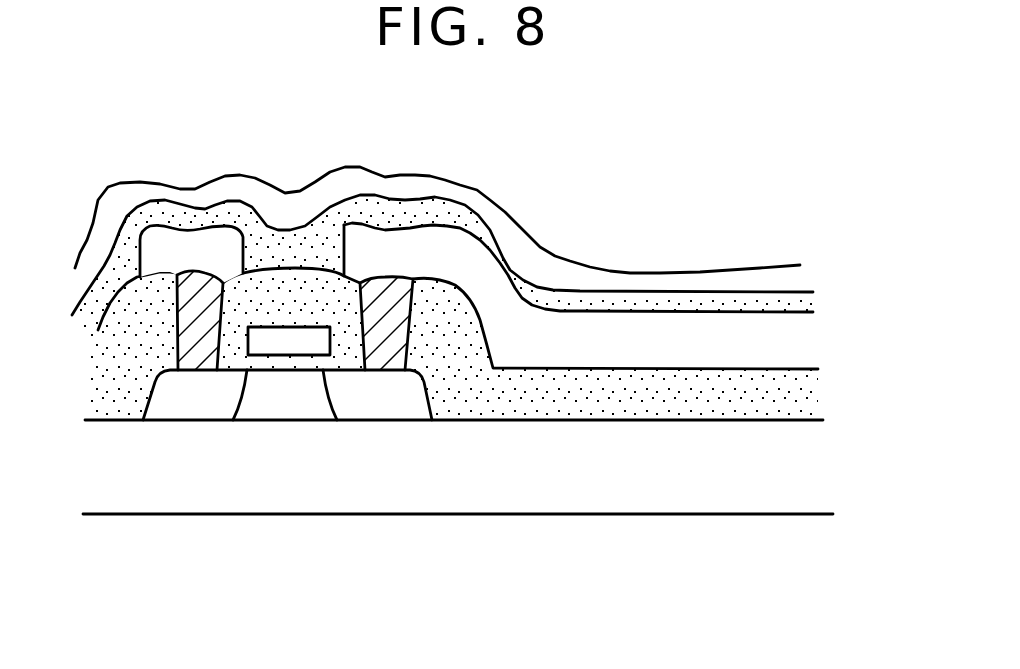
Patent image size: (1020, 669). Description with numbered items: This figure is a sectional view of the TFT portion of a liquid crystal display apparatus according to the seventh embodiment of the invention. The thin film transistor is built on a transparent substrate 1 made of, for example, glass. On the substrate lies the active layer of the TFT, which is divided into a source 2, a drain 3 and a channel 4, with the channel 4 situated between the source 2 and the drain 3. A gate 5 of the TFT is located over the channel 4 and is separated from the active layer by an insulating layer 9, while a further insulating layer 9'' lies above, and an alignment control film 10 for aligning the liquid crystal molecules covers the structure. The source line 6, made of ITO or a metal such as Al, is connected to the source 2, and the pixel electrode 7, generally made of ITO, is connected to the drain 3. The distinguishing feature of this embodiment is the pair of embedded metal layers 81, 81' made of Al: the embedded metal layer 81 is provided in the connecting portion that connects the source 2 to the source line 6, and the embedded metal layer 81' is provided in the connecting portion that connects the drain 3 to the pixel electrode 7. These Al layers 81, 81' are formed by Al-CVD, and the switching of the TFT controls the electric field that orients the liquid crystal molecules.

The transparent substrate 1 is at (802, 487).
The source 2 is at (183, 410).
The drain 3 is at (377, 407).
The channel 4 is at (300, 410).
The gate 5 is at (270, 343).
The source line 6 is at (153, 250).
The pixel electrode 7 is at (603, 330).
The insulating layer 9 is at (445, 337).
The insulating layer 9'' is at (477, 255).
The alignment control film 10 is at (768, 278).
The embedded metal layer 81 is at (207, 237).
The embedded metal layer 81' is at (392, 237).